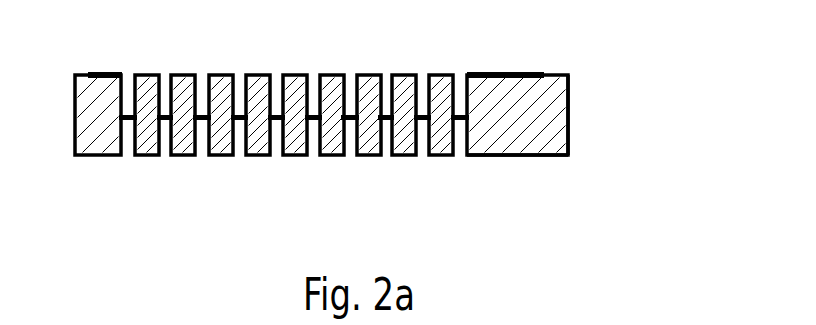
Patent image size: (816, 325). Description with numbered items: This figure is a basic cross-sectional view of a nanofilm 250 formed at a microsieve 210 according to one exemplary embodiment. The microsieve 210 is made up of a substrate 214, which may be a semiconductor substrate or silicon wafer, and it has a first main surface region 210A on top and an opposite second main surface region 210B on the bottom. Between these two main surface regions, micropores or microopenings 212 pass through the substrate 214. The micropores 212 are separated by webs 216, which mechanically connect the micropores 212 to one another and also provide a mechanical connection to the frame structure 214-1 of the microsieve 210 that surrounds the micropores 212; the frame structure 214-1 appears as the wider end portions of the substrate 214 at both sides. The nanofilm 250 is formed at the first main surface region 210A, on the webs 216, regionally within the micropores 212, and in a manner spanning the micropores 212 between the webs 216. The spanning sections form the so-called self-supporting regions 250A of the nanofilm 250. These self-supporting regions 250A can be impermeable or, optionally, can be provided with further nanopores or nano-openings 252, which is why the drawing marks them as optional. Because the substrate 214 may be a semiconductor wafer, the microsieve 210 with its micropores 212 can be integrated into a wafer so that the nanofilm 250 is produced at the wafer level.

The microsieve 210 is at (357, 129).
The first main surface region 210A is at (510, 66).
The second main surface region 210B is at (545, 165).
The micropores 212 is at (386, 128).
The substrate 214 is at (573, 75).
The frame structure 214-1 is at (121, 158).
The webs 216 is at (330, 66).
The nanofilm 250 is at (103, 66).
The self-supporting regions 250A is at (128, 128).
The nanopores 252 is at (313, 128).